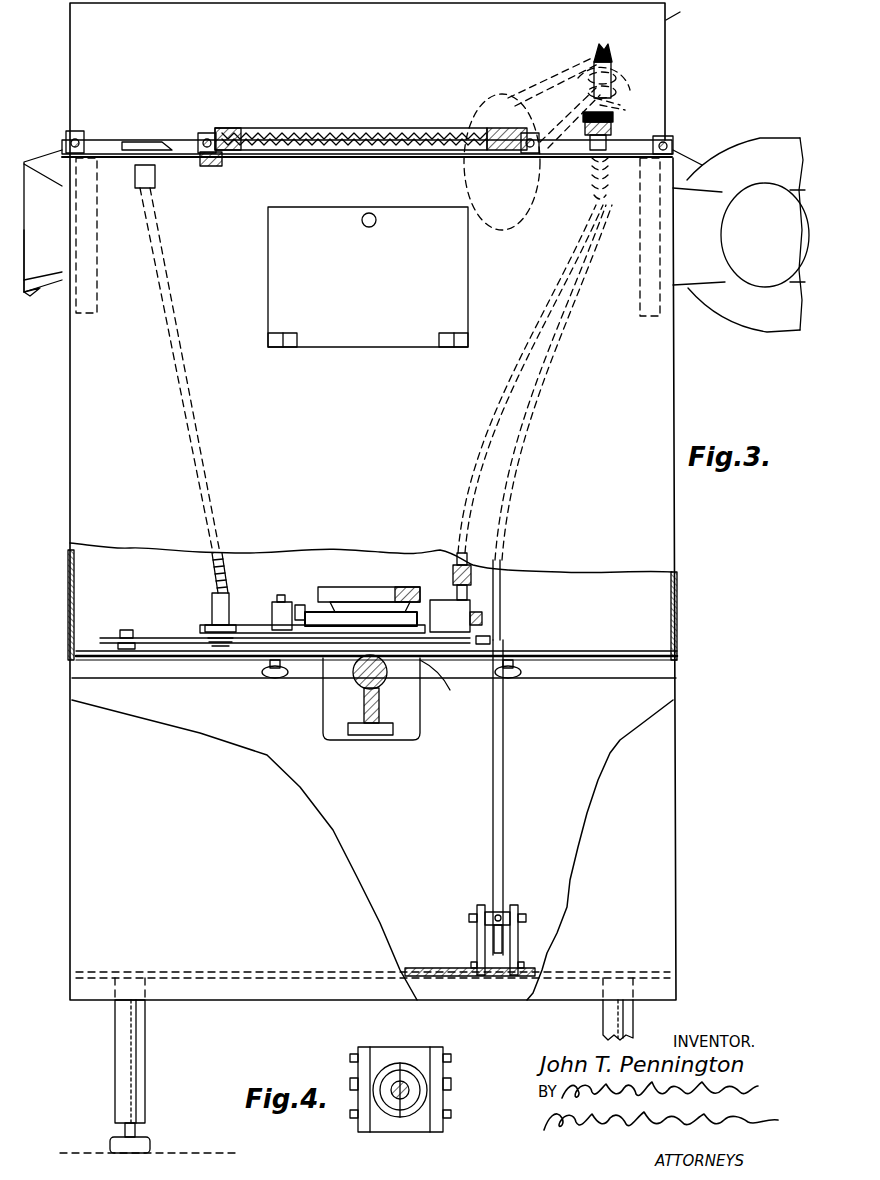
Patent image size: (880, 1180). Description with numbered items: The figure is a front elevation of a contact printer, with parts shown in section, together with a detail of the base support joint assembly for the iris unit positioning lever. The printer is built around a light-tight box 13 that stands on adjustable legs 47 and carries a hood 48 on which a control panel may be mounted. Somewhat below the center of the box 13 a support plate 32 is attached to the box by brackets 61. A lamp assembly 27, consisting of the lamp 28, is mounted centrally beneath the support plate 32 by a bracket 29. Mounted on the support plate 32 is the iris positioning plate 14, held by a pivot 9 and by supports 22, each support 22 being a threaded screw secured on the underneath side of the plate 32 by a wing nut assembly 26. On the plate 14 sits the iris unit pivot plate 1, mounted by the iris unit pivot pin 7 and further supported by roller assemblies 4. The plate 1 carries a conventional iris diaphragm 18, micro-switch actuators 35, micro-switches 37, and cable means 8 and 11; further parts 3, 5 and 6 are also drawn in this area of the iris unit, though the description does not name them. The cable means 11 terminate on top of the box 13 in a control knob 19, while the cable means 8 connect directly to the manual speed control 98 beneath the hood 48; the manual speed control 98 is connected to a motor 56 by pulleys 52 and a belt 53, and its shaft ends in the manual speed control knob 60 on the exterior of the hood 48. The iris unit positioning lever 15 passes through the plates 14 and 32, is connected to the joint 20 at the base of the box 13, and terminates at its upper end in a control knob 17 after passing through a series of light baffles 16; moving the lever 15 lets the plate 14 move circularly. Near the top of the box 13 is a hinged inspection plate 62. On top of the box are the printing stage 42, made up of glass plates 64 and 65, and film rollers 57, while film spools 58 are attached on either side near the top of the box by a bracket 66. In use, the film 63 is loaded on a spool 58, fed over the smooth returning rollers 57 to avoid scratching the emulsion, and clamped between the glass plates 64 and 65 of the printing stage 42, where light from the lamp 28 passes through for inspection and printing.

In FIG. 3, the iris unit pivot plate 1 is at (248, 622).
In FIG. 3, the pump body 3 is at (310, 612).
In FIG. 3, the roller assemblies 4 is at (442, 680).
In FIG. 3, the valve block 5 is at (484, 618).
In FIG. 3, the pipe 6 is at (500, 575).
In FIG. 3, the iris unit pivot pin 7 is at (206, 628).
In FIG. 3, the cable means 8 is at (582, 286).
In FIG. 3, the pivot 9 is at (100, 638).
In FIG. 3, the cable means 11 is at (168, 285).
In FIG. 3, the light-tight box 13 is at (68, 377).
In FIG. 3, the iris positioning plate 14 is at (550, 646).
In FIG. 3, the iris unit positioning lever 15 is at (512, 510).
In FIG. 4, the iris unit positioning lever 15 is at (404, 1100).
In FIG. 3, the light baffles 16 is at (640, 140).
In FIG. 3, the control knob 17 is at (612, 118).
In FIG. 3, the iris diaphragm 18 is at (352, 587).
In FIG. 3, the control knob 19 is at (146, 142).
In FIG. 3, the joint 20 is at (506, 906).
In FIG. 4, the joint 20 is at (414, 1046).
In FIG. 3, the supports 22 is at (488, 640).
In FIG. 3, the wing nut assembly 26 is at (272, 679).
In FIG. 3, the lamp assembly 27 is at (354, 710).
In FIG. 3, the lamp 28 is at (388, 680).
In FIG. 3, the bracket 29 is at (420, 732).
In FIG. 3, the support plate 32 is at (598, 652).
In FIG. 3, the micro-switch actuators 35 is at (398, 587).
In FIG. 3, the micro-switches 37 is at (278, 600).
In FIG. 3, the printing stage 42 is at (272, 130).
In FIG. 3, the adjustable legs 47 is at (140, 1070).
In FIG. 3, the hood 48 is at (683, 26).
In FIG. 3, the pulleys 52 is at (620, 88).
In FIG. 3, the belt 53 is at (540, 68).
In FIG. 3, the motor 56 is at (540, 196).
In FIG. 3, the film rollers 57 is at (78, 138).
In FIG. 3, the film spools 58 is at (766, 138).
In FIG. 3, the manual speed control knob 60 is at (608, 50).
In FIG. 3, the brackets 61 is at (76, 670).
In FIG. 3, the hinged inspection plate 62 is at (470, 270).
In FIG. 3, the film 63 is at (60, 148).
In FIG. 3, the glass plate 64 is at (394, 126).
In FIG. 3, the glass plate 65 is at (342, 130).
In FIG. 3, the bracket 66 is at (50, 278).
In FIG. 3, the manual speed control 98 is at (614, 110).